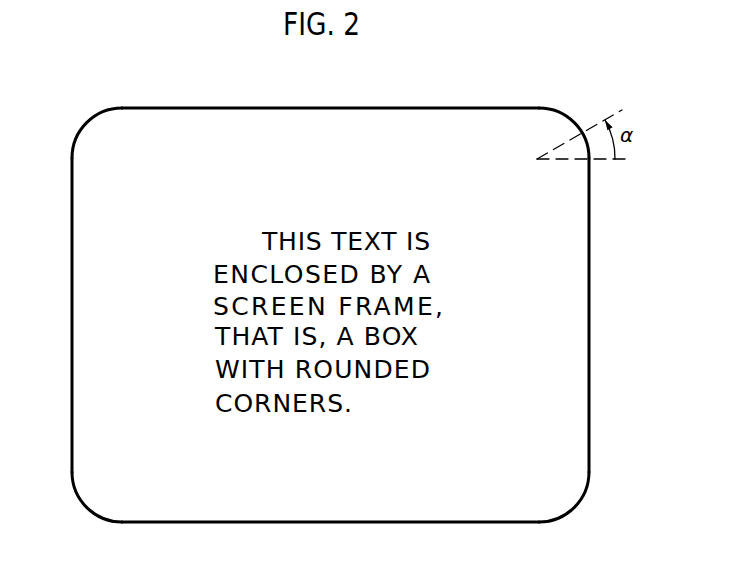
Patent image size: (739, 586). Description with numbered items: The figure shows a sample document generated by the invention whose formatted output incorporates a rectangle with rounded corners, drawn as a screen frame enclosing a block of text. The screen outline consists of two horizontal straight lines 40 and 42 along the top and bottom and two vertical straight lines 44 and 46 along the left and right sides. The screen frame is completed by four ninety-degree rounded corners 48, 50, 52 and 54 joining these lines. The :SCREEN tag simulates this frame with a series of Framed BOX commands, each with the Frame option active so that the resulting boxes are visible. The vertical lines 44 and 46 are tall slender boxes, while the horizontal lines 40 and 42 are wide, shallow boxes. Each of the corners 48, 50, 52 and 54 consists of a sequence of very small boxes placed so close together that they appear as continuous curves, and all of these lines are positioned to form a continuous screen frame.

The horizontal straight line 40 is at (342, 108).
The horizontal straight line 42 is at (348, 522).
The vertical straight line 44 is at (72, 260).
The vertical straight line 46 is at (589, 265).
The rounded corner 48 is at (88, 122).
The rounded corner 50 is at (577, 117).
The rounded corner 52 is at (85, 509).
The rounded corner 54 is at (580, 501).